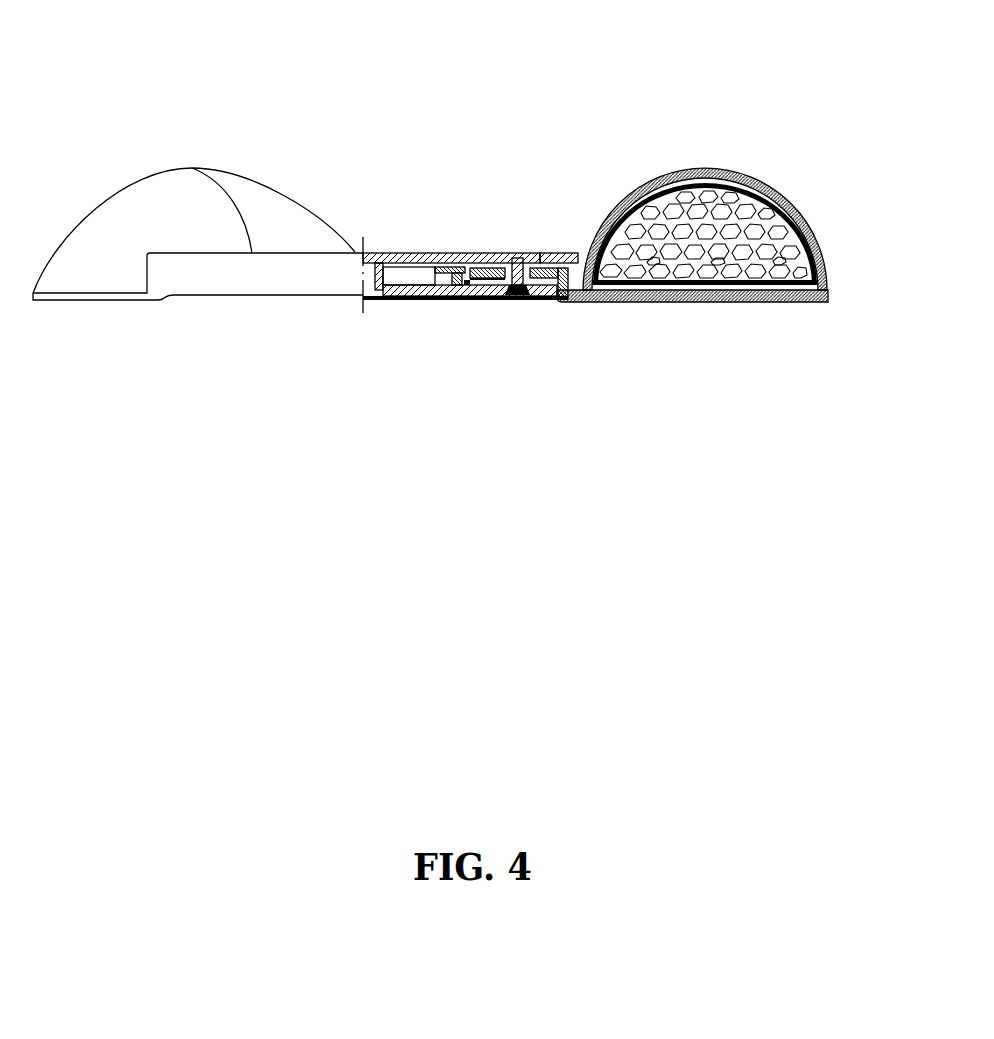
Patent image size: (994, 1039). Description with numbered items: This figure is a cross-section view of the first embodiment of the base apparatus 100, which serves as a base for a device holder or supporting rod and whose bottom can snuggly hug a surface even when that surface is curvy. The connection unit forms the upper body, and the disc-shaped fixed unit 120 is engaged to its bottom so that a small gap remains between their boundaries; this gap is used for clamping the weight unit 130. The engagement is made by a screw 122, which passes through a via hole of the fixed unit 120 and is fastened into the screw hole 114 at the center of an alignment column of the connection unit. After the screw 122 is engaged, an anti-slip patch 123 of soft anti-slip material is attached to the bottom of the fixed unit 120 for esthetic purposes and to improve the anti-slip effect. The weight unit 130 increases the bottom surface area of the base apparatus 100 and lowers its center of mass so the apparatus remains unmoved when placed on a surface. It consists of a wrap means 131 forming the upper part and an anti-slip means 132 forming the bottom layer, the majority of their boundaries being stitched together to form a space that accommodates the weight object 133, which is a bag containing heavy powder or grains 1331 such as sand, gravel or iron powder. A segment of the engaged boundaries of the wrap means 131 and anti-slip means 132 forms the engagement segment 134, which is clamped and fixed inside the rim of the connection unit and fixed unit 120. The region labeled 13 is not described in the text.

The base apparatus 100 is at (330, 116).
The light emitting element 13 is at (503, 257).
The screw hole 114 is at (543, 256).
The fixed unit 120 is at (460, 298).
The screw 122 is at (528, 298).
The anti-slip patch 123 is at (418, 298).
The weight unit 130 is at (739, 241).
The wrap means 131 is at (720, 170).
The anti-slip means 132 is at (703, 330).
The weight object 133 is at (722, 288).
The heavy powder or grains 1331 is at (698, 262).
The engagement segment 134 is at (467, 258).